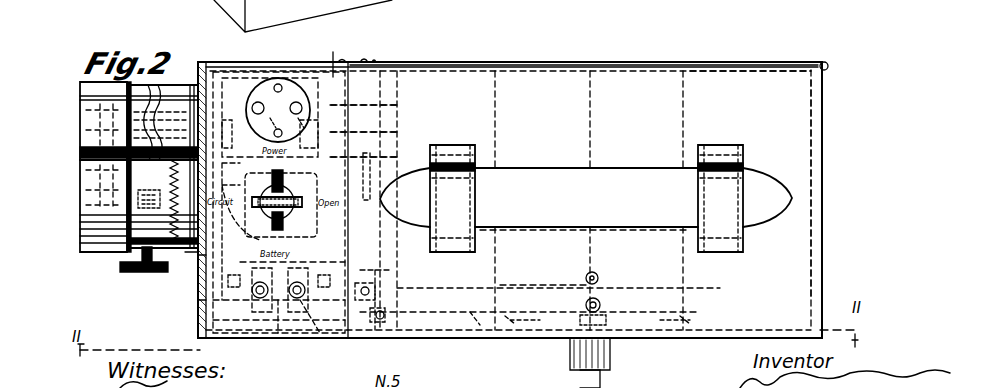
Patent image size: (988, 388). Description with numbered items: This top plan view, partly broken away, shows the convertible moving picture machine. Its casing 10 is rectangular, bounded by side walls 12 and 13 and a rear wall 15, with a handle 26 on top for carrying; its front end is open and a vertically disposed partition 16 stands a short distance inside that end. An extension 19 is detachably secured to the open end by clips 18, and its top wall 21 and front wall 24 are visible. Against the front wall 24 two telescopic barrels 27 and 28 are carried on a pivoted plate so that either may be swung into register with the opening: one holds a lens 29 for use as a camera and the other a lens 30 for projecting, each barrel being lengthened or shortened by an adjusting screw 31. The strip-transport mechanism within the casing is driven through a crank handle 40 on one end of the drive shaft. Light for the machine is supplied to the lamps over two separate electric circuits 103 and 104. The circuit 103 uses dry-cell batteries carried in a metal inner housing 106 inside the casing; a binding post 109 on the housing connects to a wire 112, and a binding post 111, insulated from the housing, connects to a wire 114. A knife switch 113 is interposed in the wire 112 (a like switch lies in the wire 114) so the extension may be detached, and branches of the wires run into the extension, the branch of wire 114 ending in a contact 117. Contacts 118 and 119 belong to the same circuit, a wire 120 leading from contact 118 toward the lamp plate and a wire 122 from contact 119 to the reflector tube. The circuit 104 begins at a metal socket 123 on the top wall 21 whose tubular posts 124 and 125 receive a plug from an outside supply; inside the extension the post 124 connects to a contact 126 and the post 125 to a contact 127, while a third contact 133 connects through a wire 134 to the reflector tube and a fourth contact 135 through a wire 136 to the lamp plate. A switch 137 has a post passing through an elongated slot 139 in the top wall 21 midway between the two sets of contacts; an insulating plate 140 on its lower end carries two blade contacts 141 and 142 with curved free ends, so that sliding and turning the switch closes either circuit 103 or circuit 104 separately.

The casing 10 is at (822, 173).
The side wall 12 is at (450, 339).
The side wall 13 is at (537, 63).
The rear wall 15 is at (818, 213).
The partition 16 is at (403, 82).
The clips 18 is at (357, 60).
The extension 19 is at (196, 328).
The top wall 21 is at (334, 53).
The front wall 24 is at (200, 303).
The handle 26 is at (629, 178).
The telescopic barrel 27 is at (157, 270).
The telescopic barrel 28 is at (188, 83).
The lens 29 is at (93, 262).
The lens 30 is at (100, 93).
The adjusting screw 31 is at (128, 275).
The crank handle 40 is at (583, 380).
The electric circuit 103 is at (322, 338).
The electric circuit 104 is at (256, 71).
The inner housing 106 is at (725, 63).
The binding post 109 is at (600, 277).
The binding post 111 is at (603, 303).
The wire 112 is at (523, 284).
The knife switch 113 is at (396, 283).
The wire 114 is at (478, 322).
The contact 117 is at (278, 338).
The contact 118 is at (202, 282).
The contact 119 is at (390, 252).
The wire 120 is at (236, 292).
The wire 122 is at (233, 336).
The metal socket 123 is at (290, 88).
The tubular post 124 is at (256, 106).
The tubular post 125 is at (302, 108).
The contact 126 is at (296, 150).
The contact 127 is at (385, 165).
The third contact 133 is at (215, 135).
The wire 134 is at (215, 118).
The fourth contact 135 is at (397, 125).
The wire 136 is at (398, 100).
The switch 137 is at (318, 205).
The elongated slot 139 is at (296, 226).
The insulating plate 140 is at (385, 157).
The contact 141 is at (197, 252).
The contact 142 is at (164, 204).